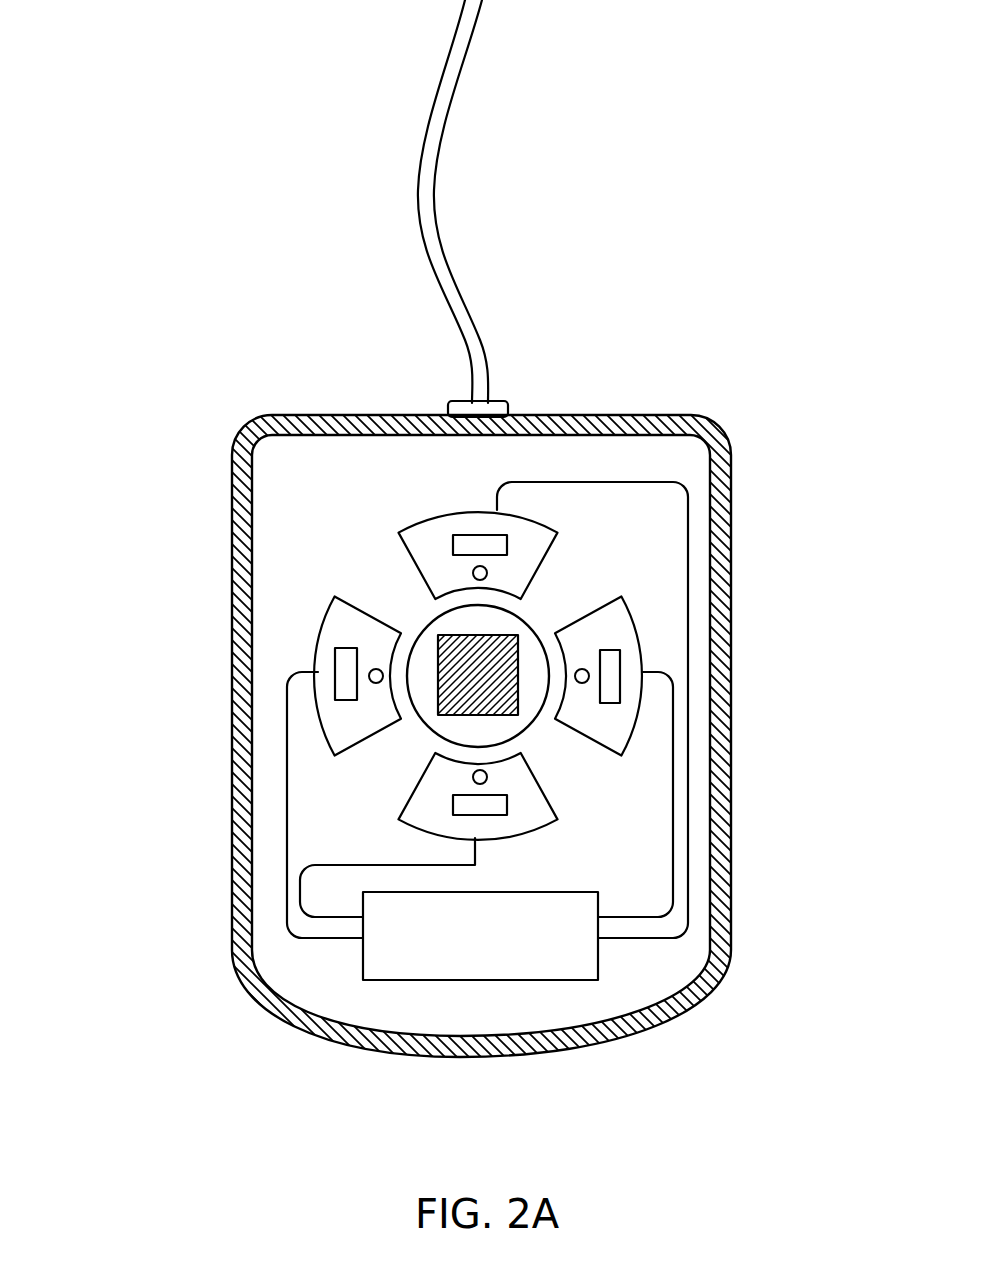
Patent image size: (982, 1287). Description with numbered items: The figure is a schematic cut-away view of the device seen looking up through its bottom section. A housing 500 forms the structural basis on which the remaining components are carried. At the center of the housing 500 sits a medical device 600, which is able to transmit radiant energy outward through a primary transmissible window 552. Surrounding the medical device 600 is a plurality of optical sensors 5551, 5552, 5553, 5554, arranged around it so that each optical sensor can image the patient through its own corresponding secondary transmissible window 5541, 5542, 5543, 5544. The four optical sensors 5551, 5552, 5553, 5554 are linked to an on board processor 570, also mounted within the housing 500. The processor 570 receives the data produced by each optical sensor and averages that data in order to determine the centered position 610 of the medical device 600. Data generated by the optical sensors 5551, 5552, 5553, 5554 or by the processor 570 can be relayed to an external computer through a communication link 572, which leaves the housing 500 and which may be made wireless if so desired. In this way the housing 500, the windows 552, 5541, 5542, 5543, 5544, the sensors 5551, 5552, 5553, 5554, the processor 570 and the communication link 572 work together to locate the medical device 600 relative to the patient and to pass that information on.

The housing 500 is at (727, 447).
The communication link 572 is at (452, 62).
The primary transmissible window 552 is at (548, 612).
The on board processor 570 is at (506, 960).
The medical device 600 is at (505, 712).
The centered position 610 is at (522, 720).
The secondary transmissible window 5541 is at (607, 628).
The secondary transmissible window 5542 is at (417, 810).
The secondary transmissible window 5543 is at (345, 733).
The secondary transmissible window 5544 is at (440, 530).
The optical sensor 5551 is at (612, 733).
The optical sensor 5552 is at (503, 805).
The optical sensor 5553 is at (345, 661).
The optical sensor 5554 is at (488, 547).